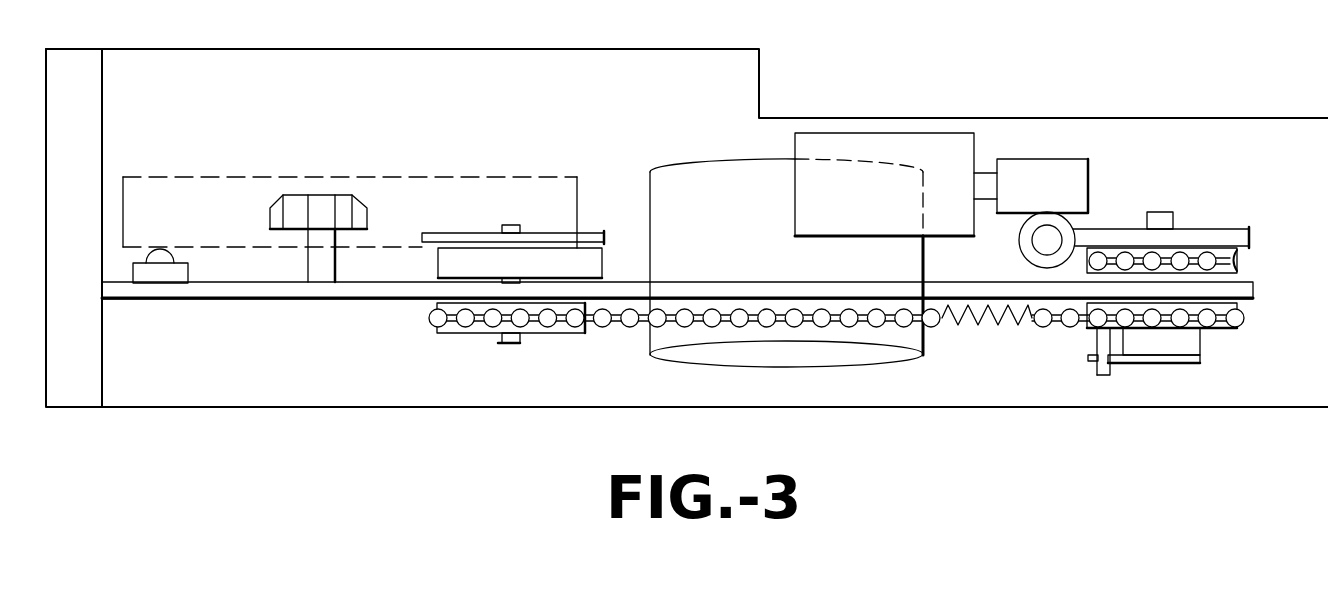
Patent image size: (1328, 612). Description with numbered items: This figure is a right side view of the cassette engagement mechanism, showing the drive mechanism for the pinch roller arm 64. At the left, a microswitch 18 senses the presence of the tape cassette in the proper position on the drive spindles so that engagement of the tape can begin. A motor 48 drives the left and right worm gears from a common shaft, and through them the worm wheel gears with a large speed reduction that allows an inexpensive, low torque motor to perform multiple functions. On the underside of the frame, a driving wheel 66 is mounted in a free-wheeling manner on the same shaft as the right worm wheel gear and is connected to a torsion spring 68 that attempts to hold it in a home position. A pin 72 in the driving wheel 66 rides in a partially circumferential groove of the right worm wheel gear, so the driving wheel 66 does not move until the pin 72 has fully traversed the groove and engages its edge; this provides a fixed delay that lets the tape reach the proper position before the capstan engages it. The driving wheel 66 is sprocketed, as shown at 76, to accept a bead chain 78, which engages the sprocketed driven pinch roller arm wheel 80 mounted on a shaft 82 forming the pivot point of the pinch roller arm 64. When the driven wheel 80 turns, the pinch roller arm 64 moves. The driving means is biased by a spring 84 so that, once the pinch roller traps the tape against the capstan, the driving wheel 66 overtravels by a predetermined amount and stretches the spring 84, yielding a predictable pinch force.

The microswitch 18 is at (188, 272).
The motor 48 is at (974, 142).
The pinch roller arm 64 is at (593, 235).
The driving wheel 66 is at (1200, 335).
The torsion spring 68 is at (1112, 363).
The pin 72 is at (1093, 345).
The sprocket 76 is at (1238, 313).
The bead chain 78 is at (624, 330).
The sprocketed driven pinch roller arm wheel 80 is at (469, 333).
The shaft 82 is at (510, 345).
The spring 84 is at (982, 322).